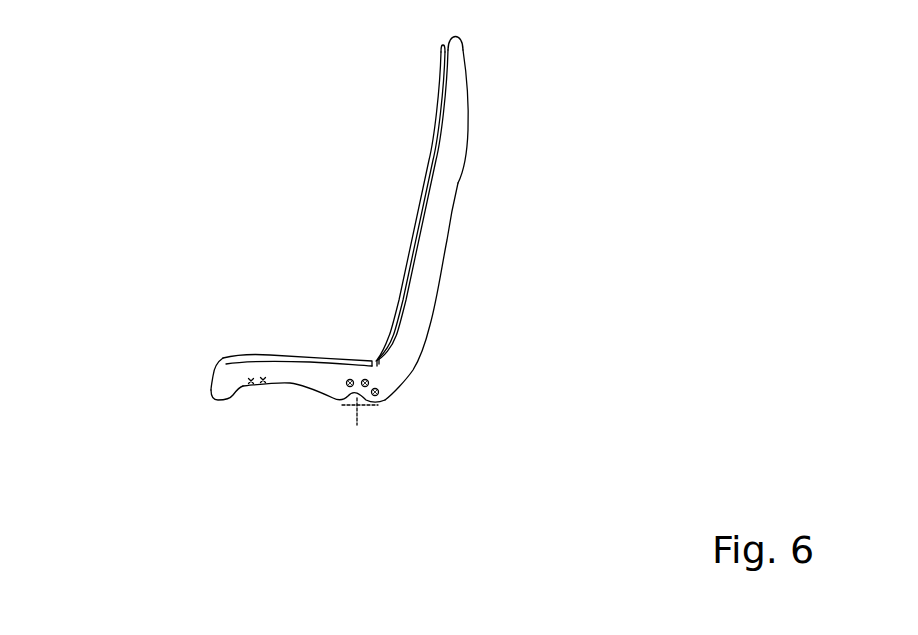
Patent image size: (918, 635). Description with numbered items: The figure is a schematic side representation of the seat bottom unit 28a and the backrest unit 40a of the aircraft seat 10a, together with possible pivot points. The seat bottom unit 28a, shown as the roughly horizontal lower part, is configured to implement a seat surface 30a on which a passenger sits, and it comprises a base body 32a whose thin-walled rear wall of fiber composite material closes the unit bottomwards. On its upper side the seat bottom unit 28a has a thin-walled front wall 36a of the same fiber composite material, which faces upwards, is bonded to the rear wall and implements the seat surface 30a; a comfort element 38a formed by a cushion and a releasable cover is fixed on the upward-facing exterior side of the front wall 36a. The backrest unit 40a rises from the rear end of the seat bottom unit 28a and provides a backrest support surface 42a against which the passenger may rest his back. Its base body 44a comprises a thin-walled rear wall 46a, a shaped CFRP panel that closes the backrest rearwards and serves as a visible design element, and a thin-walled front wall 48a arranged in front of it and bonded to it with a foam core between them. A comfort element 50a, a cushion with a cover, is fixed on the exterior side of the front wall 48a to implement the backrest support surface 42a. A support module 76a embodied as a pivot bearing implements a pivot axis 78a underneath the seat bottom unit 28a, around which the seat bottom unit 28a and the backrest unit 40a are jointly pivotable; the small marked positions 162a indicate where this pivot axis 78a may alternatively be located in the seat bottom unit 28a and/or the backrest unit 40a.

The aircraft seat 10a is at (190, 191).
The seat bottom unit 28a is at (306, 358).
The seat surface 30a is at (343, 362).
The base body 32a is at (282, 388).
The thin-walled front wall 36a is at (236, 358).
The comfort element 38a is at (262, 356).
The backrest unit 40a is at (448, 186).
The backrest support surface 42a is at (422, 183).
The base body 44a is at (463, 76).
The thin-walled rear wall 46a is at (468, 131).
The thin-walled front wall 48a is at (442, 83).
The comfort element 50a is at (440, 130).
The support module 76a is at (358, 443).
The pivot axis 78a is at (362, 408).
The positions 162a is at (384, 379).